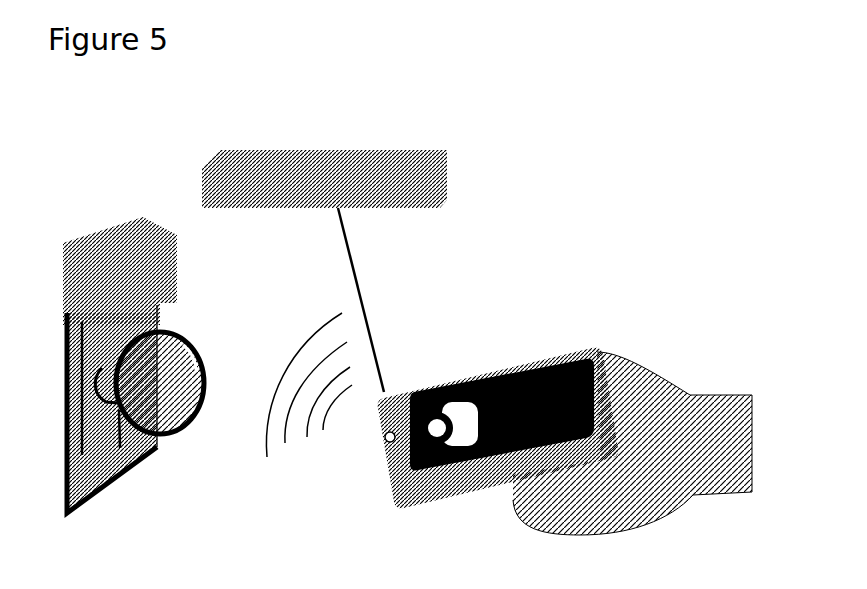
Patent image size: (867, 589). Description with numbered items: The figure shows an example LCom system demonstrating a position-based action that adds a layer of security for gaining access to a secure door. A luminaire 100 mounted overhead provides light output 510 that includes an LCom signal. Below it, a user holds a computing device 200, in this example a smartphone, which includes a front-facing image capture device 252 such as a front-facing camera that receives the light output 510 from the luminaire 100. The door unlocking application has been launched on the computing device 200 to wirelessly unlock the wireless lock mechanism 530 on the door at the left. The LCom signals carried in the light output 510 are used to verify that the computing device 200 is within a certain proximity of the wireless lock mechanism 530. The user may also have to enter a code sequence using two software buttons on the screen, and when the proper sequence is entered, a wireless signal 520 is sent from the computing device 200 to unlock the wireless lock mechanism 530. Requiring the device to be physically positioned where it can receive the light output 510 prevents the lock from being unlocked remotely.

The wireless lock mechanism 530 is at (135, 221).
The luminaire 100 is at (403, 160).
The light output 510 is at (363, 298).
The front-facing image capture device 252 is at (400, 413).
The computing device 200 is at (577, 350).
The wireless signal 520 is at (295, 449).